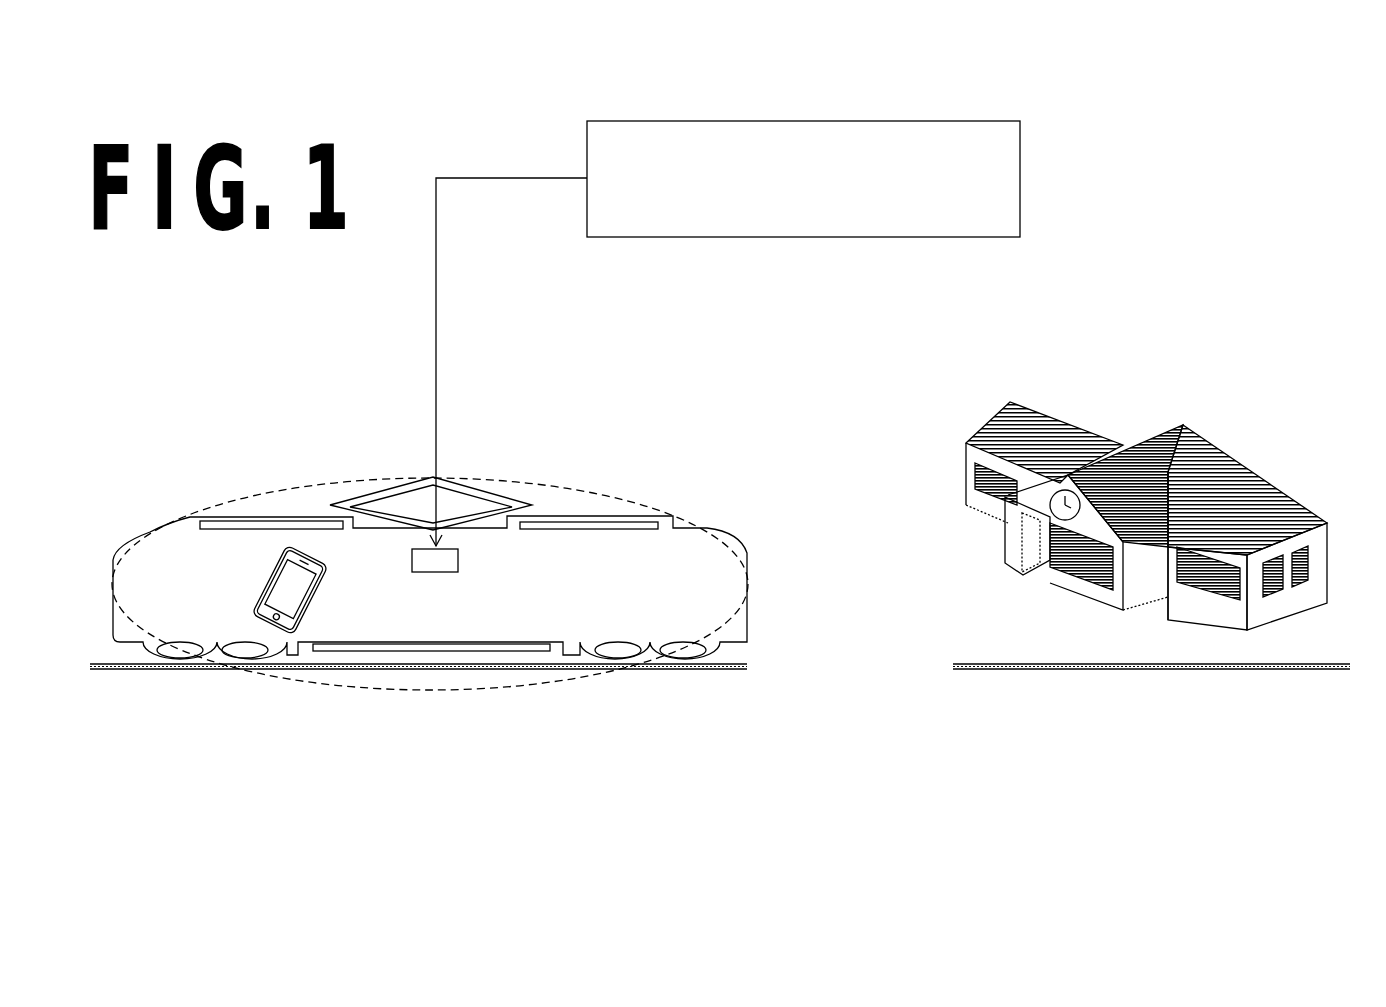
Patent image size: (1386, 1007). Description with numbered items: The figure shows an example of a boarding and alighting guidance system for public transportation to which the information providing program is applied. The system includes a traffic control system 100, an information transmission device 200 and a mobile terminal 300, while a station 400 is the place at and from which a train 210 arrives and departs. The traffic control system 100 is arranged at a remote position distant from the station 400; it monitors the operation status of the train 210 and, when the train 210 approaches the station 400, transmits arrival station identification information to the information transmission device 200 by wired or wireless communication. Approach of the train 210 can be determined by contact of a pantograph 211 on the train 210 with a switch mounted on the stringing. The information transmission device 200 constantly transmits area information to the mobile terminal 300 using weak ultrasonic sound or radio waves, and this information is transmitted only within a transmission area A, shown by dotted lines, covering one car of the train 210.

The traffic control system 100 is at (1032, 159).
The information transmission device 200 is at (460, 573).
The train 210 is at (258, 460).
The pantograph 211 is at (470, 487).
The mobile terminal 300 is at (268, 587).
The station 400 is at (1162, 418).
The transmission area A is at (607, 496).